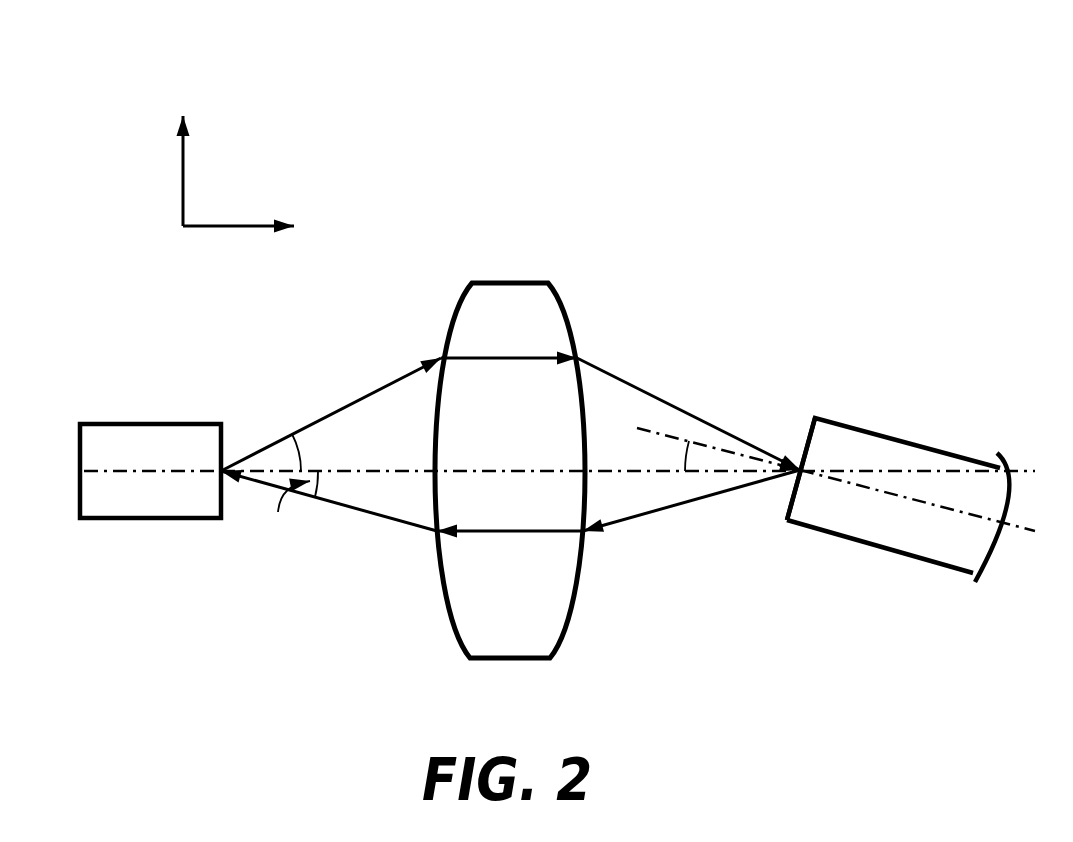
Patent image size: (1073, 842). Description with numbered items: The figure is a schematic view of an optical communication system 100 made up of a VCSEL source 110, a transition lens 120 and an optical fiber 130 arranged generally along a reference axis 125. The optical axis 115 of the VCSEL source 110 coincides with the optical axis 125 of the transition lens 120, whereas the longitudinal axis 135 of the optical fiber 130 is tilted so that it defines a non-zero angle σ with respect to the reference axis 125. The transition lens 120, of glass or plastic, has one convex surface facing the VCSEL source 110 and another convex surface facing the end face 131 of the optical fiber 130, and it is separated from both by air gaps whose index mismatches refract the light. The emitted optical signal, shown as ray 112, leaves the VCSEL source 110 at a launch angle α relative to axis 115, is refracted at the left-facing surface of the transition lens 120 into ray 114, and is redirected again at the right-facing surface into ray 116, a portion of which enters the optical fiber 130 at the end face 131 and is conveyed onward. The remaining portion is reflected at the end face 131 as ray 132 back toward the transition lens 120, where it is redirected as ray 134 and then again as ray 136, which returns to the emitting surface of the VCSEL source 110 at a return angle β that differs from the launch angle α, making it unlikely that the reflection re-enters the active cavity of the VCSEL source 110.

The optical communication system 100 is at (790, 150).
The VCSEL source 110 is at (175, 508).
The ray 112 is at (377, 388).
The ray 114 is at (508, 358).
The optical axis 115 is at (128, 483).
The ray 116 is at (610, 375).
The transition lens 120 is at (507, 295).
The axis 125 is at (470, 471).
The optical fiber 130 is at (935, 550).
The end face 131 is at (800, 432).
The ray 132 is at (697, 498).
The ray 134 is at (567, 530).
The longitudinal axis 135 is at (1011, 545).
The ray 136 is at (388, 518).